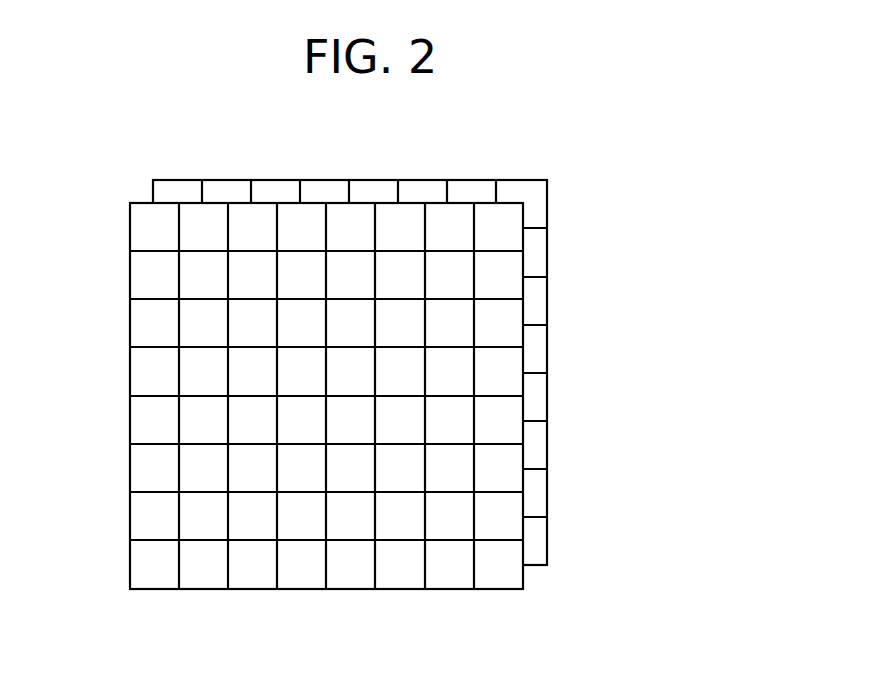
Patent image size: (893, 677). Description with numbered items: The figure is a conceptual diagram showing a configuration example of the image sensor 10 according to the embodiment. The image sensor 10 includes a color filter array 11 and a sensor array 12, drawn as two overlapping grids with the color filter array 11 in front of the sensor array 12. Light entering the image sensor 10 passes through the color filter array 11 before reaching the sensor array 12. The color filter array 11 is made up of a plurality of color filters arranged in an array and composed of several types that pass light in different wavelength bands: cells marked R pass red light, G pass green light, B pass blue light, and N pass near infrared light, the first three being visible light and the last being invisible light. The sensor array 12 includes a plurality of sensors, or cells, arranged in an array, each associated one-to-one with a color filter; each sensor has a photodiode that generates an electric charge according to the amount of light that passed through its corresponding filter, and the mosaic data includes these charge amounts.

The image sensor 10 is at (134, 167).
The color filter array 11 is at (328, 589).
The sensor array 12 is at (427, 185).